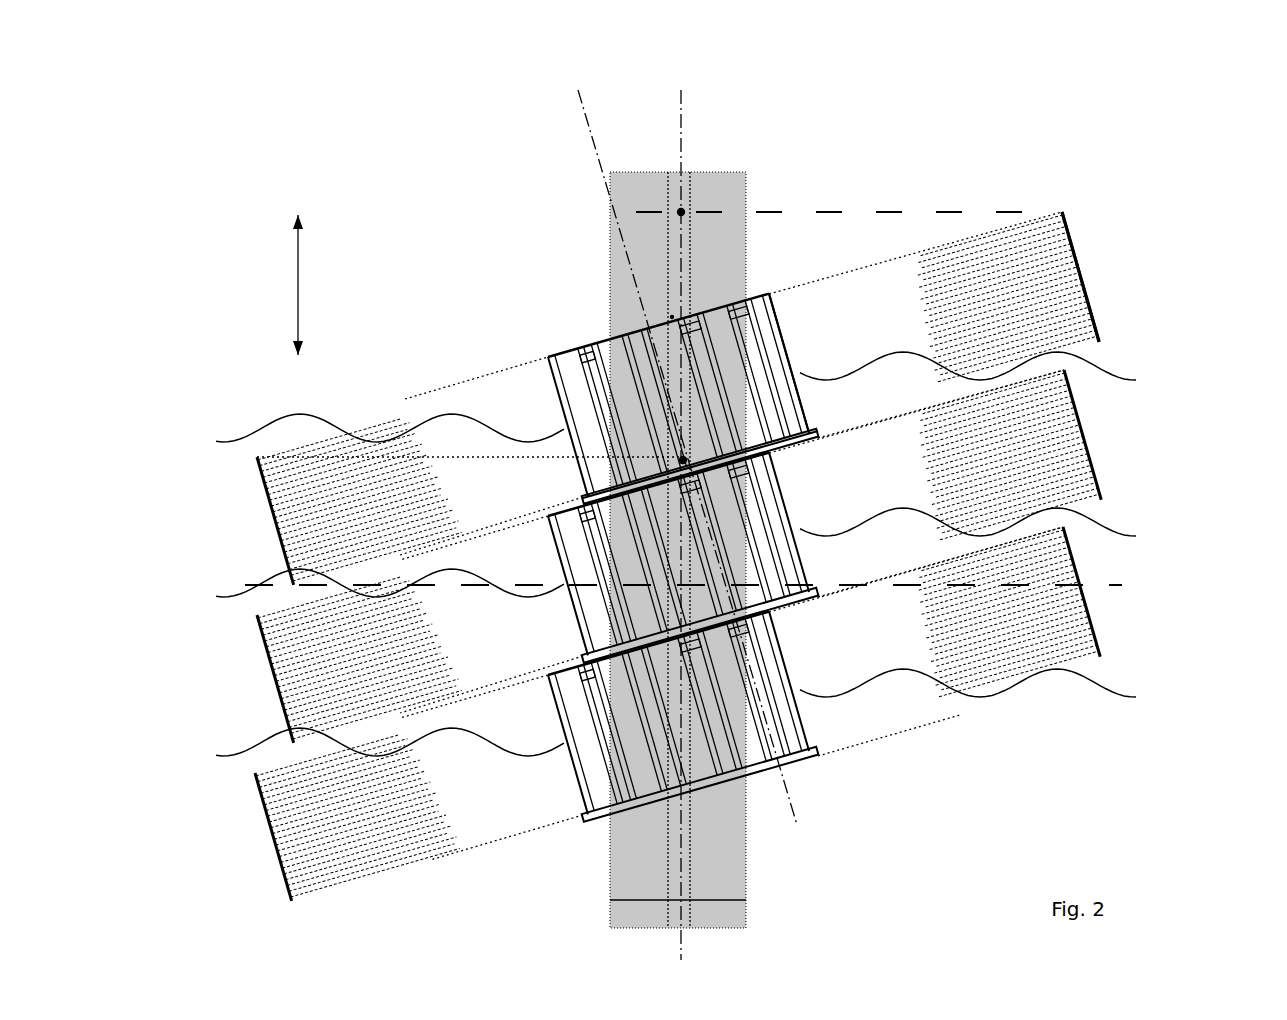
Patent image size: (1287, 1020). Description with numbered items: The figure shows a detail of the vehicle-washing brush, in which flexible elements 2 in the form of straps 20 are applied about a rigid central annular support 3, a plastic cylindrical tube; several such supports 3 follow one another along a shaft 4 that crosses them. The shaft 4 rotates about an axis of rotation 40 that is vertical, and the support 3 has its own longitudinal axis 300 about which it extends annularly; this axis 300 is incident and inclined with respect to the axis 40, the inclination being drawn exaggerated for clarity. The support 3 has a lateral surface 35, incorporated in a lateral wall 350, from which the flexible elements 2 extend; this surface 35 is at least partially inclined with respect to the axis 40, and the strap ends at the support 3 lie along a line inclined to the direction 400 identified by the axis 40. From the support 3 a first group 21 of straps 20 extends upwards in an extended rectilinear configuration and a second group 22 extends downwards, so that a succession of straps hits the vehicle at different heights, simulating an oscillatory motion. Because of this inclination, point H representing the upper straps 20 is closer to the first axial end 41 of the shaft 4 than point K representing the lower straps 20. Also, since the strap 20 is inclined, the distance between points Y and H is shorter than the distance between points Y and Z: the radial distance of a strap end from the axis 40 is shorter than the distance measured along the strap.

The flexible elements 2 is at (818, 298).
The central annular support 3 is at (618, 366).
The shaft 4 is at (746, 880).
The straps 20 is at (1106, 298).
The first group of flexible elements 21 is at (1090, 290).
The second group of flexible elements 22 is at (265, 516).
The lateral surface 35 is at (803, 393).
The lateral wall 350 is at (807, 409).
The axis of rotation 40 is at (687, 143).
The first axial end 41 is at (688, 165).
The longitudinal axis 300 is at (598, 133).
The direction 400 is at (262, 285).
The point H is at (688, 212).
The point K is at (681, 458).
The point Y is at (1055, 205).
The point Z is at (672, 317).